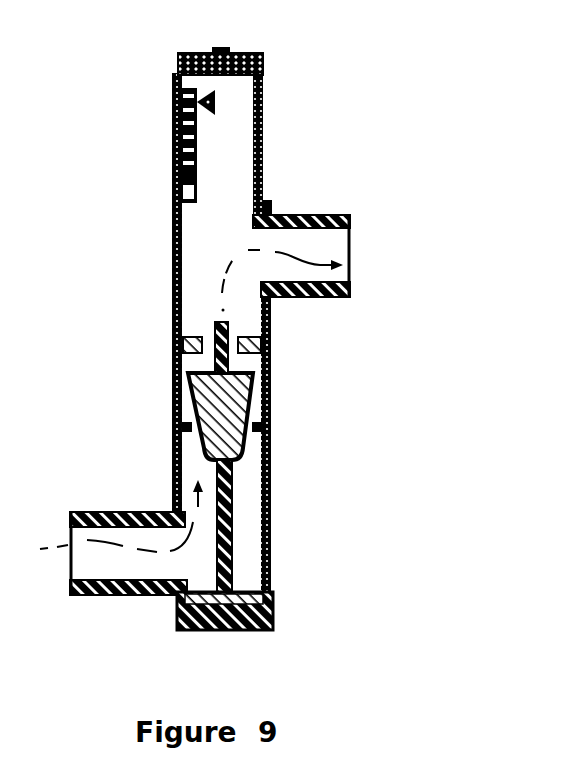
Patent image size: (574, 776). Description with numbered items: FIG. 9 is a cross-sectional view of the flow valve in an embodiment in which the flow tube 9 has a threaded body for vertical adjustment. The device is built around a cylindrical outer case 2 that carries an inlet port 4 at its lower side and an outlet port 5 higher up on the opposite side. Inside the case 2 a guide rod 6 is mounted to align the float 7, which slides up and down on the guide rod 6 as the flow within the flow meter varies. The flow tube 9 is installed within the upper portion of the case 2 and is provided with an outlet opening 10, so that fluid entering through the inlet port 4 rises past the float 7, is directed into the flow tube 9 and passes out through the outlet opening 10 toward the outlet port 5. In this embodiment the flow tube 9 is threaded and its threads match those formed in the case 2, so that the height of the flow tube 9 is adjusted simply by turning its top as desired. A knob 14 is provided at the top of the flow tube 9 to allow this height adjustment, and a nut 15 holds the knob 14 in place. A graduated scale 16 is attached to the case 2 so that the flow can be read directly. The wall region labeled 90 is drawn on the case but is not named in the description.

The outer case 2 is at (158, 263).
The inlet port 4 is at (88, 560).
The outlet port 5 is at (335, 237).
The guide rod 6 is at (233, 483).
The float 7 is at (250, 408).
The flow tube 9 is at (292, 155).
The outlet opening 10 is at (263, 242).
The knob 14 is at (260, 69).
The nut 15 is at (218, 49).
The graduated scale 16 is at (172, 132).
The housing wall 90 is at (263, 118).